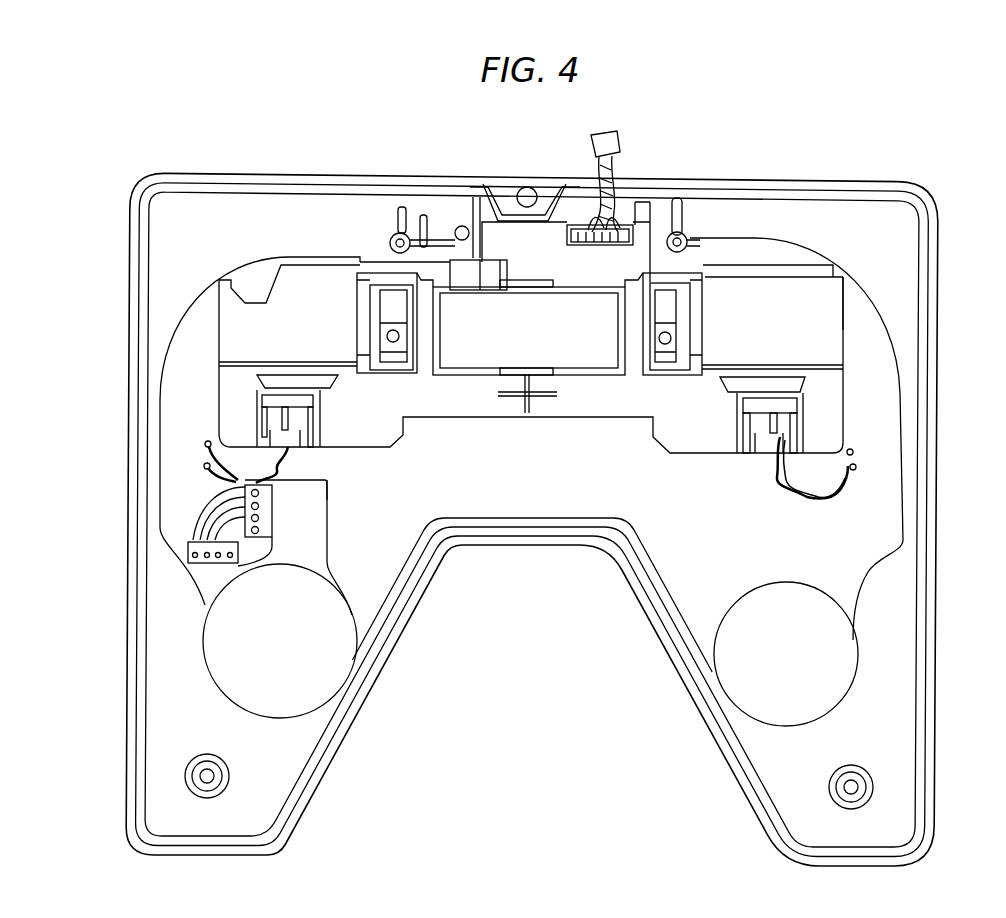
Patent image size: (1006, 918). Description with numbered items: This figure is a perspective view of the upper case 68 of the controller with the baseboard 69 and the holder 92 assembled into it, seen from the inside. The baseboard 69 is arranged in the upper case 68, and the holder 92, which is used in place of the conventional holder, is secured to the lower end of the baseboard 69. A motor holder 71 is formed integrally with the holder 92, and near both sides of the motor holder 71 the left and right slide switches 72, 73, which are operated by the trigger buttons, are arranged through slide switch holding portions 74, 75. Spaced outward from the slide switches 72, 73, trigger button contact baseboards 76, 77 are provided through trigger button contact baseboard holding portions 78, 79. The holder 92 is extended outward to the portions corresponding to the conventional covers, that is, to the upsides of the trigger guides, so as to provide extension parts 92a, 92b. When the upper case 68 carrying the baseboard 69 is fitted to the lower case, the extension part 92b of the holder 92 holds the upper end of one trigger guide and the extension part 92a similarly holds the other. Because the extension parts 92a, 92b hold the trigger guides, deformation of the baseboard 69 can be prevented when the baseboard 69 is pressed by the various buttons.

The upper case 68 is at (500, 172).
The baseboard 69 is at (877, 410).
The motor holder 71 is at (483, 290).
The slide switch 72 is at (651, 290).
The slide switch 73 is at (392, 332).
The slide switch holding portion 74 is at (690, 315).
The slide switch holding portion 75 is at (368, 337).
The trigger button contact baseboard 76 is at (772, 410).
The trigger button contact baseboard 77 is at (282, 400).
The trigger button contact baseboard holding portion 78 is at (797, 427).
The trigger button contact baseboard holding portion 79 is at (268, 428).
The holder 92 is at (810, 293).
The extension part 92a is at (760, 292).
The extension part 92b is at (268, 308).